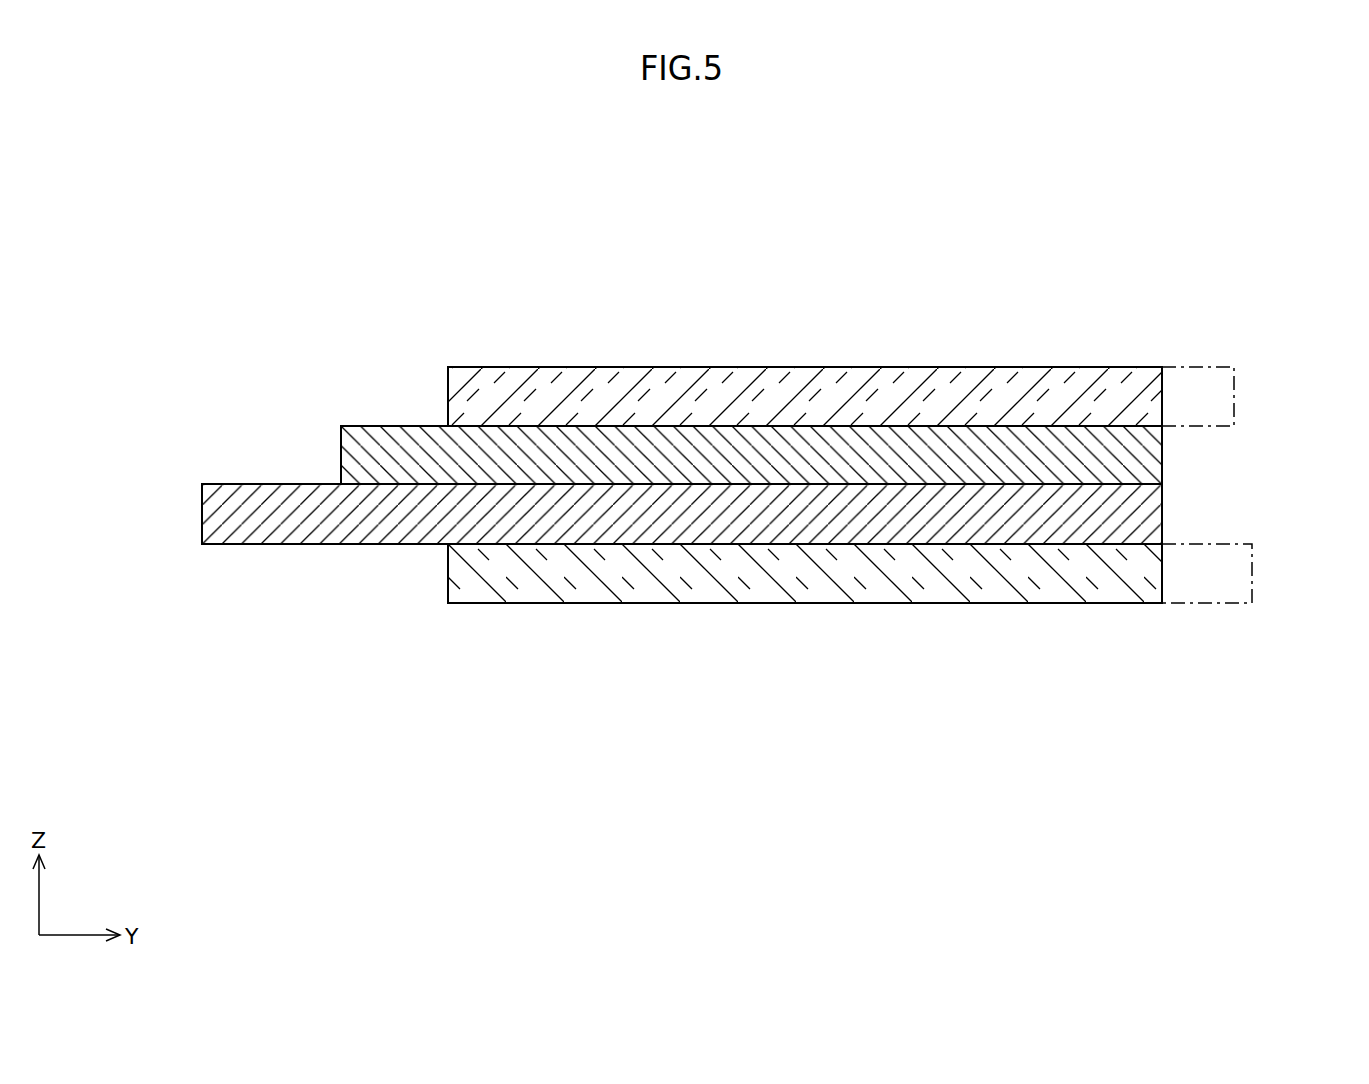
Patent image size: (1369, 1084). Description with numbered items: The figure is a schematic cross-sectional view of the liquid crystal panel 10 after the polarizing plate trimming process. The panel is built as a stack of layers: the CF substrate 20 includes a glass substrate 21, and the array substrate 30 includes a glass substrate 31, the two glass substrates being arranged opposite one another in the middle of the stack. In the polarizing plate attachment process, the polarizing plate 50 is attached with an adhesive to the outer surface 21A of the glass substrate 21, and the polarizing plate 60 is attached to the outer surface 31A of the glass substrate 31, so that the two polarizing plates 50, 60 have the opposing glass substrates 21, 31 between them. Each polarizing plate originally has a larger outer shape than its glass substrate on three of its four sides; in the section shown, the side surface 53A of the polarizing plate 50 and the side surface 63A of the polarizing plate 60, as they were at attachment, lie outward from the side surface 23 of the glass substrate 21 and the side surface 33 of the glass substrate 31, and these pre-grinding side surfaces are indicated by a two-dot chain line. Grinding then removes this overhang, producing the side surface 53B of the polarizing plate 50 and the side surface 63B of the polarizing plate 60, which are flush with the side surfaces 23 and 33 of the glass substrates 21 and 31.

The liquid crystal panel 10 is at (1038, 302).
The CF substrate 20 is at (751, 391).
The glass substrate 21 is at (706, 455).
The outer surface 21A is at (592, 425).
The side surface 23 is at (1163, 453).
The array substrate 30 is at (682, 574).
The glass substrate 31 is at (748, 512).
The outer surface 31A is at (585, 545).
The side surface 33 is at (1163, 512).
The polarizing plate 50 is at (903, 392).
The side surface before grinding 53A is at (1236, 386).
The side surface after grinding 53B is at (1163, 387).
The polarizing plate 60 is at (942, 580).
The side surface before grinding 63A is at (1254, 577).
The side surface after grinding 63B is at (1163, 574).